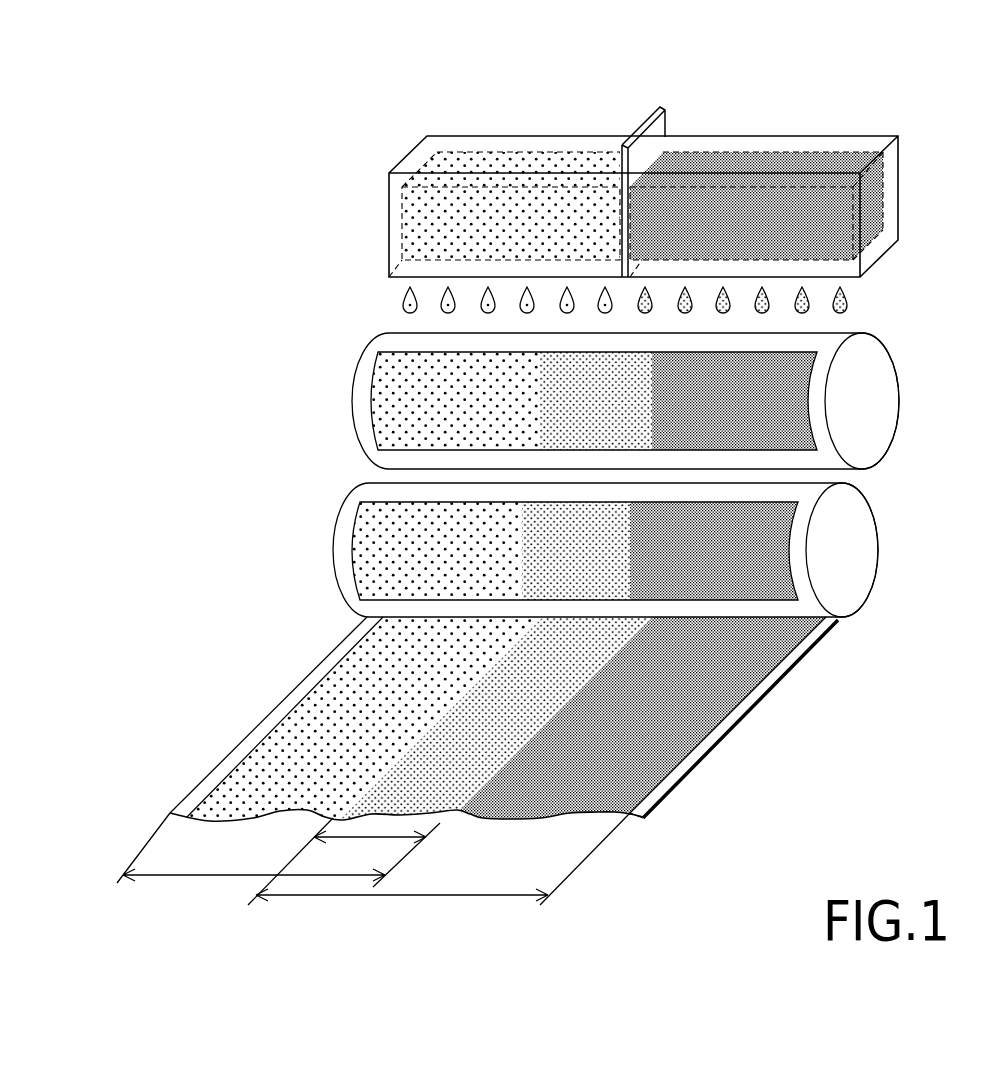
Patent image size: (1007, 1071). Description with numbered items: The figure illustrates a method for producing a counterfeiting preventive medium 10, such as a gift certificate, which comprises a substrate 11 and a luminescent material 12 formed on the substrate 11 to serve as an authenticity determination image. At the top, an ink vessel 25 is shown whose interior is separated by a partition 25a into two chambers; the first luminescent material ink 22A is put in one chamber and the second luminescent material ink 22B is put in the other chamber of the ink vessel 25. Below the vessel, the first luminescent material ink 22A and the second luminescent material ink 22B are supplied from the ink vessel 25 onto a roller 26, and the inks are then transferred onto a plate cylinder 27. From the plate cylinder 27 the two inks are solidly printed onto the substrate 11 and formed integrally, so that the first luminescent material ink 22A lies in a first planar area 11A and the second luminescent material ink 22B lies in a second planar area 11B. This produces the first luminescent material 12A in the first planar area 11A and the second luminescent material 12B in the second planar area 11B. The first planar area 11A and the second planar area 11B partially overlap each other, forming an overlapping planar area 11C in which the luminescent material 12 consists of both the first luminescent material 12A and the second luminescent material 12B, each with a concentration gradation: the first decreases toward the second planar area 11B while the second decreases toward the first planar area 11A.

The counterfeiting preventive medium 10 is at (530, 765).
The substrate 11 is at (670, 780).
The first planar area 11A is at (278, 859).
The second planar area 11B is at (443, 872).
The overlapping planar area 11C is at (337, 861).
The luminescent material 12 is at (516, 715).
The first luminescent material 12A is at (340, 727).
The second luminescent material 12B is at (627, 728).
The first luminescent material ink 22A is at (518, 162).
The second luminescent material ink 22B is at (763, 160).
The ink vessel 25 is at (892, 195).
The partition 25a is at (653, 110).
The roller 26 is at (867, 383).
The plate cylinder 27 is at (845, 535).